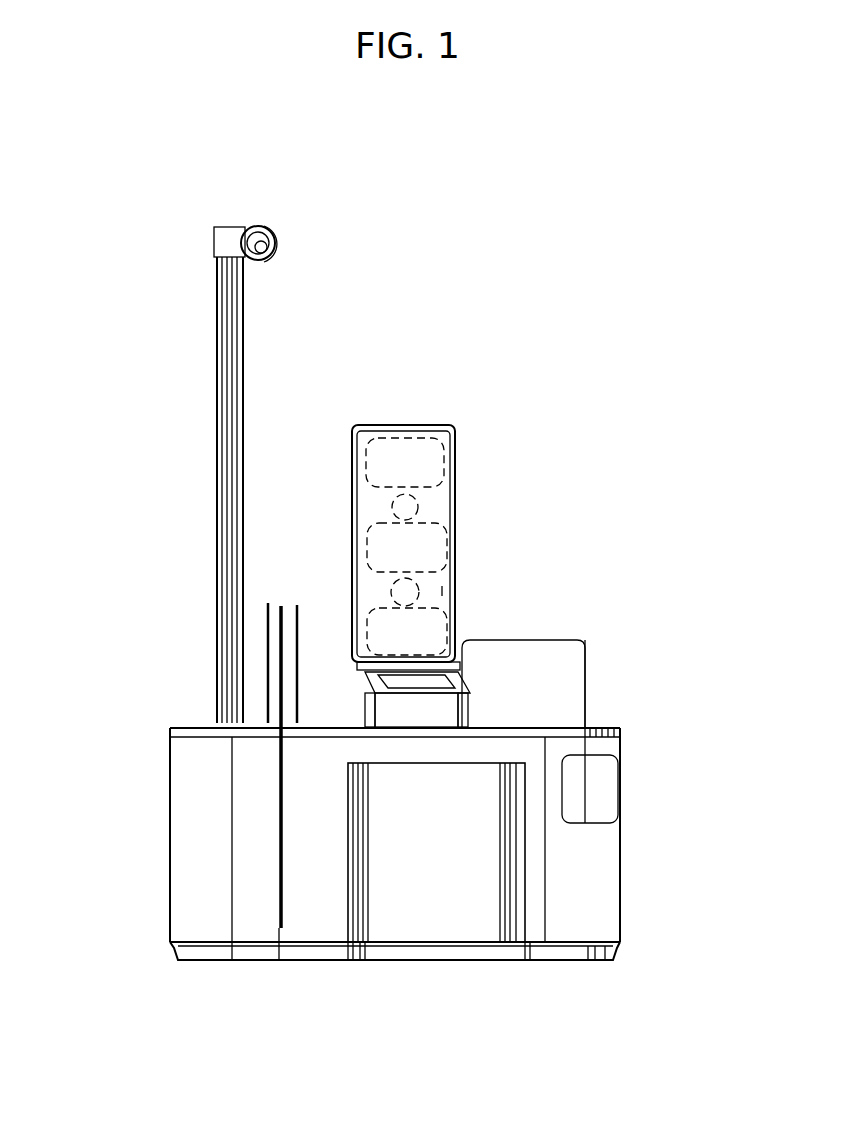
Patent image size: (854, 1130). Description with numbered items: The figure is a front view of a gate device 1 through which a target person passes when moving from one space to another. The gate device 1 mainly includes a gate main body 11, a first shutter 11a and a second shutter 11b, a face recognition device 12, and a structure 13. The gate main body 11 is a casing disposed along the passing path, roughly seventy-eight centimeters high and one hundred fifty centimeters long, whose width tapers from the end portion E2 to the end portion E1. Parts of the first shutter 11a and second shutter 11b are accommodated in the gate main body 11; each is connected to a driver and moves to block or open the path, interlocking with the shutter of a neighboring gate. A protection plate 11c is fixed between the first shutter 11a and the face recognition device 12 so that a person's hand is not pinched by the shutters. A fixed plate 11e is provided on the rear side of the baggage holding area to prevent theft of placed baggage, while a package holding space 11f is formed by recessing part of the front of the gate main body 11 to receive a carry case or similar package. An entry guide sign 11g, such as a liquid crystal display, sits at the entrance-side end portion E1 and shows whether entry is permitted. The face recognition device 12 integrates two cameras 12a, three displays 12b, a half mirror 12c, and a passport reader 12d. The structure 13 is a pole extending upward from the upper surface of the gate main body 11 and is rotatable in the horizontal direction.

The gate device 1 is at (664, 240).
The gate main body 11 is at (452, 792).
The first shutter 11a is at (282, 606).
The second shutter 11b is at (266, 606).
The protection plate 11c is at (297, 604).
The fixed plate 11e is at (563, 675).
The package holding space 11f is at (480, 848).
The entry guide sign 11g is at (605, 778).
The face recognition device 12 is at (453, 549).
The camera 12a is at (420, 508).
The display 12b is at (375, 610).
The half mirror 12c is at (442, 591).
The passport reader 12d is at (430, 683).
The structure 13 is at (262, 320).
The end portion E1 is at (643, 720).
The end portion E2 is at (145, 737).